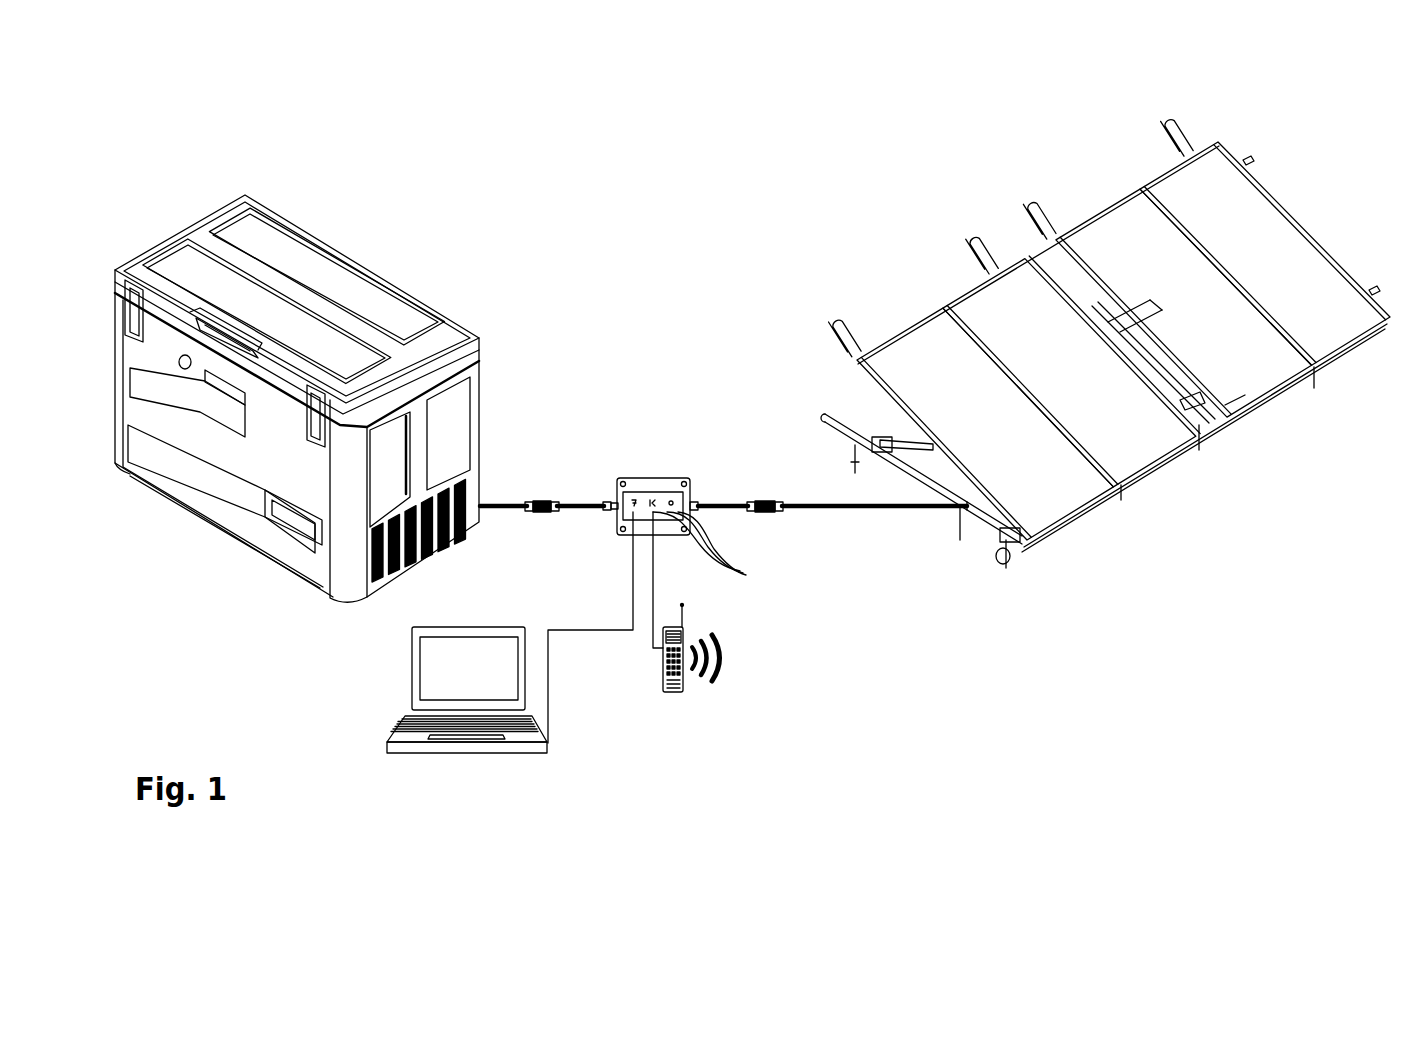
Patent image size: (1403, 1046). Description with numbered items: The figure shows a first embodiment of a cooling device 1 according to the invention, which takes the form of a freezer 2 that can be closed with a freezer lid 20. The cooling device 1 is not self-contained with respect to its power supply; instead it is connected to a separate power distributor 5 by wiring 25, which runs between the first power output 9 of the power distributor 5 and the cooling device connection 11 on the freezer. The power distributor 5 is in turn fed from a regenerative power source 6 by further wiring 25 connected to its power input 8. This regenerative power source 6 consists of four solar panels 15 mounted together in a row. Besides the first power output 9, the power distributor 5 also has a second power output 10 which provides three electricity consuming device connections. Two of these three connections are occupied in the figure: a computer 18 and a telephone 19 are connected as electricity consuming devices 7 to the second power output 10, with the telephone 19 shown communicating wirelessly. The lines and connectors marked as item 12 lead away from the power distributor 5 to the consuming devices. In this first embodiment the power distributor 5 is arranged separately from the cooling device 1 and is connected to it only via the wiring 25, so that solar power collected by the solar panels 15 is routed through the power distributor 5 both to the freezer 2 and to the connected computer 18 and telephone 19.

The cooling device 1 is at (298, 367).
The freezer 2 is at (388, 452).
The power distributor 5 is at (677, 477).
The regenerative power source 6 is at (1105, 338).
The electricity consuming devices 7 is at (354, 717).
The power input 8 is at (718, 502).
The first power output 9 is at (589, 478).
The second power output 10 is at (618, 503).
The cooling device connection 11 is at (526, 510).
The output wires 12 is at (740, 571).
The solar panels 15 is at (965, 419).
The computer 18 is at (412, 673).
The telephone 19 is at (686, 687).
The freezer lid 20 is at (314, 295).
The wiring 25 is at (497, 478).